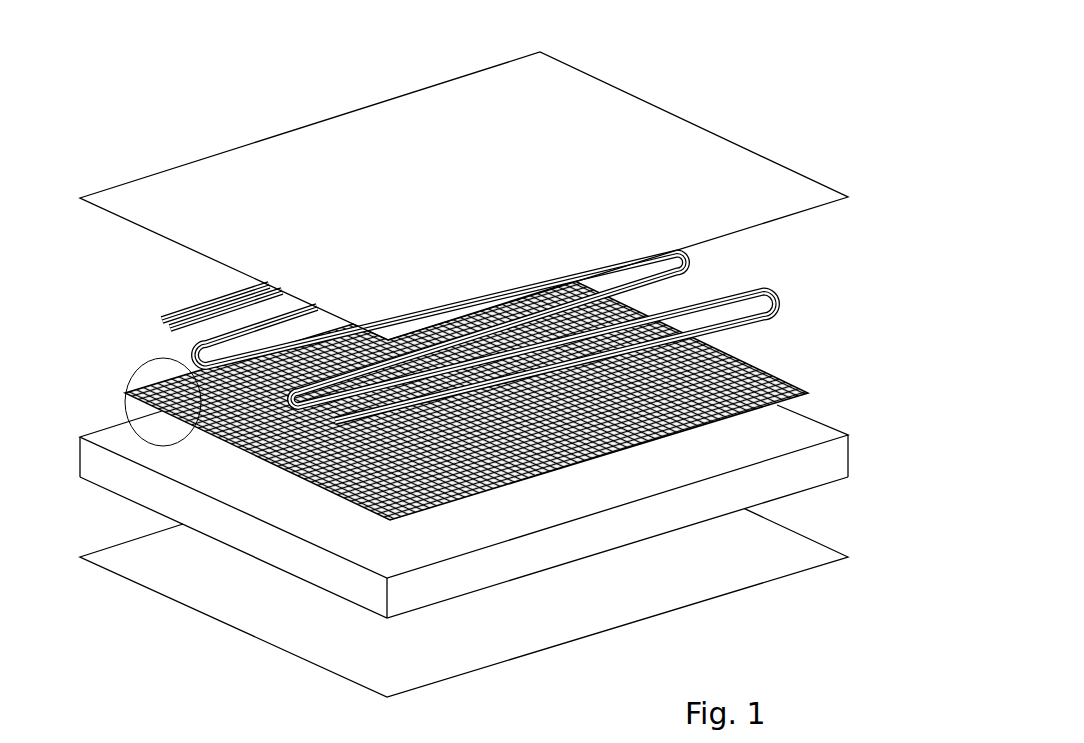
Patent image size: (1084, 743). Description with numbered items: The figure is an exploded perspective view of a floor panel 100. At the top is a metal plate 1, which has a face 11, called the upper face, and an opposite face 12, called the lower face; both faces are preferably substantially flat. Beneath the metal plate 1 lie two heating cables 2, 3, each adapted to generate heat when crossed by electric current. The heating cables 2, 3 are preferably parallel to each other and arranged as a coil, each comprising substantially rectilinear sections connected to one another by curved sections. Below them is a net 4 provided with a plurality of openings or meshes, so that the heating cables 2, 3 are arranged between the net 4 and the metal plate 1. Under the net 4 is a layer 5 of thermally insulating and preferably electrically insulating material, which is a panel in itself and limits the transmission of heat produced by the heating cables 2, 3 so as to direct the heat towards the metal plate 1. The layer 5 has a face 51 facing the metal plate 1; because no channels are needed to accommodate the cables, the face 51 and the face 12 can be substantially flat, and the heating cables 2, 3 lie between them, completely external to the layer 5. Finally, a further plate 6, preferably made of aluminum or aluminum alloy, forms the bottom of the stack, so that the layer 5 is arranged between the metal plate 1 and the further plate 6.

The floor panel 100 is at (335, 100).
The metal plate 1 is at (520, 196).
The face 11 is at (520, 196).
The face 12 is at (733, 235).
The heating cable 2 is at (162, 322).
The heating cable 3 is at (168, 328).
The net 4 is at (812, 393).
The layer 5 is at (512, 511).
The face 51 is at (810, 437).
The further plate 6 is at (812, 572).